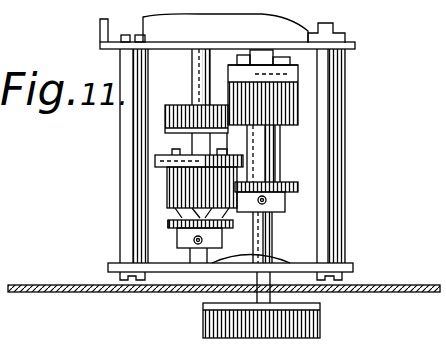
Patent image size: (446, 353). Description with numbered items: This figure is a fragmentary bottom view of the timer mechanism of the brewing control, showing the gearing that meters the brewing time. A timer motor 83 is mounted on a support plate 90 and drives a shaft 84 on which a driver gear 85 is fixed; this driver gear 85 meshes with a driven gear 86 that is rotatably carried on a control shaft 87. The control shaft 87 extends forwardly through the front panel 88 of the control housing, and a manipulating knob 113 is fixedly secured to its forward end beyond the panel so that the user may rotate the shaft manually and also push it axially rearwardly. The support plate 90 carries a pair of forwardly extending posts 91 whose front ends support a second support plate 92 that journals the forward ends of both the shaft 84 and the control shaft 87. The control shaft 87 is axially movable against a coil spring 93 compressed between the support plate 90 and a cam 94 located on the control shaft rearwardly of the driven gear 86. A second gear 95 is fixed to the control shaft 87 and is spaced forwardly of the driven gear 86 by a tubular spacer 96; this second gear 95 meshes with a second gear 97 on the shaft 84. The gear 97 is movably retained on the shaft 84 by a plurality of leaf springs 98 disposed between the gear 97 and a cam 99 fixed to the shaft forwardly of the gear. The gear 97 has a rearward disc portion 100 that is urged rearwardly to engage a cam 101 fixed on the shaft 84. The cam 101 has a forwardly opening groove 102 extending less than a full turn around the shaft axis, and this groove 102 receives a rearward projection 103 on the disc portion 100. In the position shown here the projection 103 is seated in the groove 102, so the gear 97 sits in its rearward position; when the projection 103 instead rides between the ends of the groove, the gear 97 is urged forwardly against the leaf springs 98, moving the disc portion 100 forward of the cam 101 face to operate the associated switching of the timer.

The timer motor 83 is at (218, 38).
The shaft 84 is at (197, 61).
The driver gear 85 is at (182, 104).
The driven gear 86 is at (298, 108).
The control shaft 87 is at (268, 240).
The front panel 88 is at (412, 284).
The support plate 90 is at (355, 46).
The posts 91 is at (128, 62).
The second support plate 92 is at (354, 268).
The coil spring 93 is at (281, 56).
The cam 94 is at (298, 77).
The second gear 95 is at (298, 193).
The tubular spacer 96 is at (271, 164).
The second gear 97 is at (166, 190).
The leaf springs 98 is at (238, 213).
The cam 99 is at (172, 223).
The disc portion 100 is at (155, 161).
The cam 101 is at (172, 143).
The groove 102 is at (155, 152).
The rearward projection 103 is at (268, 141).
The manipulating knob 113 is at (322, 322).